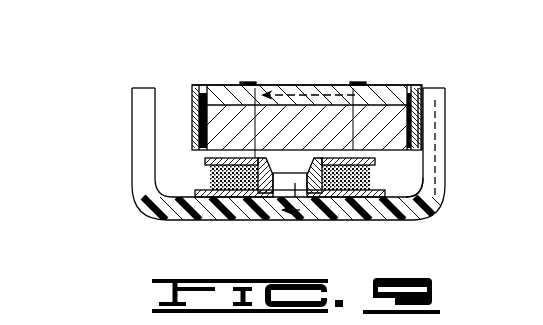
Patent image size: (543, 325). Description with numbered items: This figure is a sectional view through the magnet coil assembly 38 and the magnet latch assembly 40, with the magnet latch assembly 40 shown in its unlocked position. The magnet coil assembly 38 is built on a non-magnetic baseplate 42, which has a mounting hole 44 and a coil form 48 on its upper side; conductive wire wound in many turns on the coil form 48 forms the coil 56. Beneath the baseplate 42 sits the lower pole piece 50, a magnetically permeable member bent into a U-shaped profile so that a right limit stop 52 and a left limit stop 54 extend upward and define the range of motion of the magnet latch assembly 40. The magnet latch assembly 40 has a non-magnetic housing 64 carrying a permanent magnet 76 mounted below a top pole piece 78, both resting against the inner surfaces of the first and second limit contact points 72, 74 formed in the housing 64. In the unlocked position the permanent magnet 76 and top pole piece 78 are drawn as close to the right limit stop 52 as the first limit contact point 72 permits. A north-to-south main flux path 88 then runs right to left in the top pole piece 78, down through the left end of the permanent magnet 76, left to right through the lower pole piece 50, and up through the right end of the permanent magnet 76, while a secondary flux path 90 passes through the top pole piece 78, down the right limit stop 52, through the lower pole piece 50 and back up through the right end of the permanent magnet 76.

The magnet coil assembly 38 is at (126, 152).
The magnet latch assembly 40 is at (184, 86).
The baseplate 42 is at (167, 222).
The mounting hole 44 is at (310, 200).
The coil form 48 is at (218, 218).
The lower pole piece 50 is at (410, 205).
The right limit stop 52 is at (437, 103).
The left limit stop 54 is at (132, 92).
The coil 56 is at (248, 215).
The housing 64 is at (199, 85).
The first limit contact point 72 is at (420, 87).
The second limit contact point 74 is at (198, 84).
The permanent magnet 76 is at (363, 105).
The top pole piece 78 is at (333, 85).
The main flux path 88 is at (301, 85).
The secondary flux path 90 is at (433, 162).